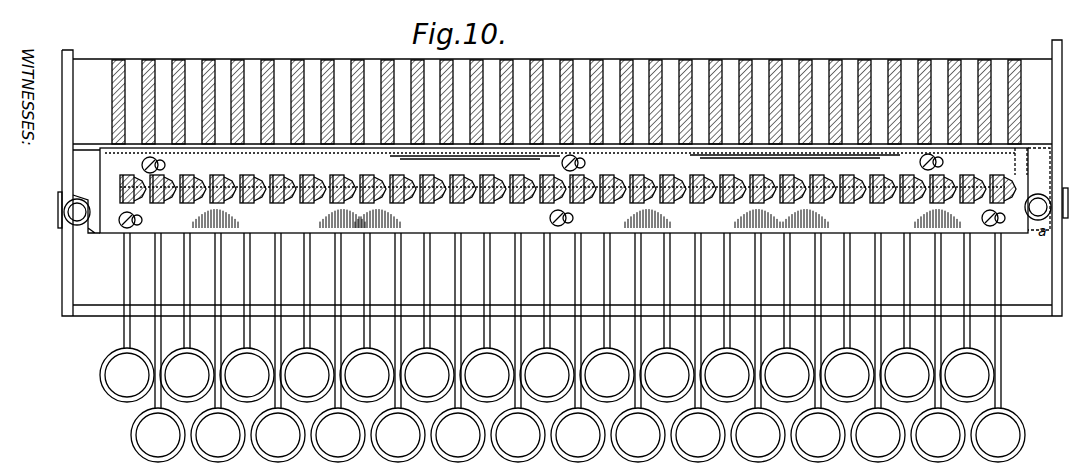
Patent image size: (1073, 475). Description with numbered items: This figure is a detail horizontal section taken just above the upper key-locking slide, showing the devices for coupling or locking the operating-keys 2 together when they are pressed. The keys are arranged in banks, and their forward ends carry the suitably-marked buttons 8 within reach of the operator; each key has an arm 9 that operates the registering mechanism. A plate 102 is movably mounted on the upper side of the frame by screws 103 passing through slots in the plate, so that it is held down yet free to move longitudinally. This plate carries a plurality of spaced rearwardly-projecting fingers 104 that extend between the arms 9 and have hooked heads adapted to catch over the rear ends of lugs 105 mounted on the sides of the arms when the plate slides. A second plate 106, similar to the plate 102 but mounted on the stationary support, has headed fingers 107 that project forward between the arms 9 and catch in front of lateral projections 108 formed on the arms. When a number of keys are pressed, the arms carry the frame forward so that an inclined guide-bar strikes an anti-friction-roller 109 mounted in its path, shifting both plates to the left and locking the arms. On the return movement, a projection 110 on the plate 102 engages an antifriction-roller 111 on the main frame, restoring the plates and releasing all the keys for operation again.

The operating-keys 2 is at (122, 323).
The buttons 8 is at (325, 459).
The arm 9 is at (133, 176).
The plate 102 is at (415, 215).
The screws 103 is at (140, 219).
The fingers 104 is at (305, 203).
The lugs 105 is at (592, 206).
The plate 106 is at (295, 164).
The headed fingers 107 is at (400, 174).
The lateral projections 108 is at (222, 176).
The anti-friction-roller 109 is at (1030, 196).
The projection 110 is at (92, 233).
The antifriction-roller 111 is at (62, 212).